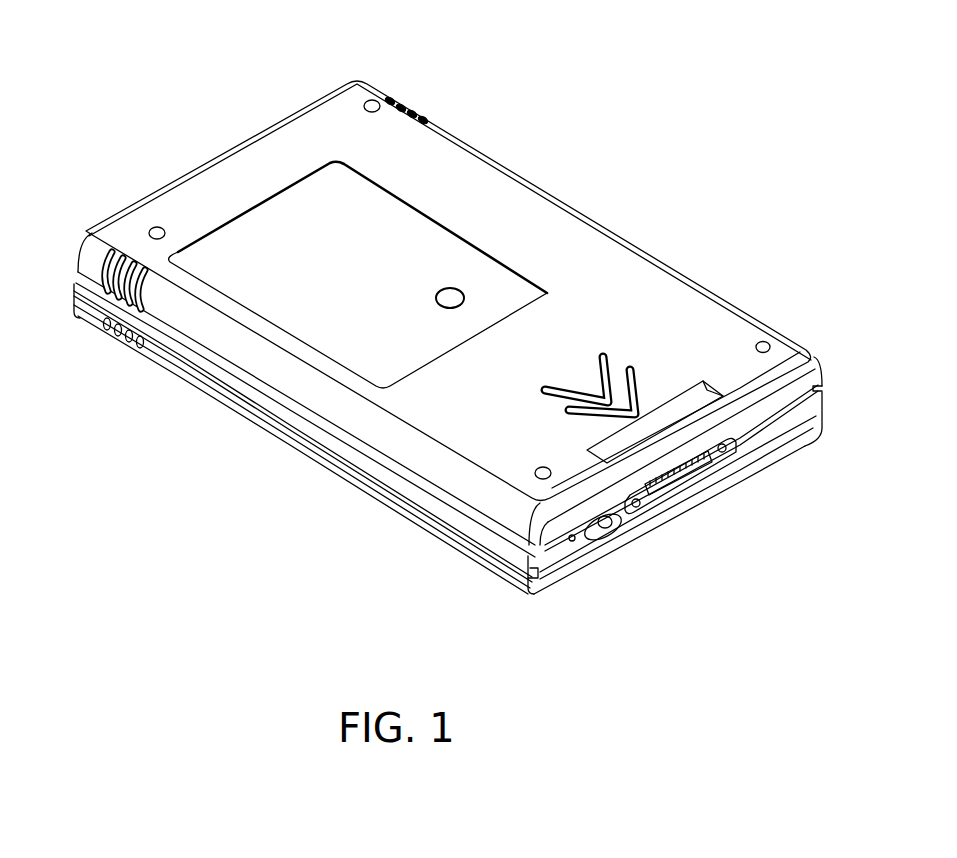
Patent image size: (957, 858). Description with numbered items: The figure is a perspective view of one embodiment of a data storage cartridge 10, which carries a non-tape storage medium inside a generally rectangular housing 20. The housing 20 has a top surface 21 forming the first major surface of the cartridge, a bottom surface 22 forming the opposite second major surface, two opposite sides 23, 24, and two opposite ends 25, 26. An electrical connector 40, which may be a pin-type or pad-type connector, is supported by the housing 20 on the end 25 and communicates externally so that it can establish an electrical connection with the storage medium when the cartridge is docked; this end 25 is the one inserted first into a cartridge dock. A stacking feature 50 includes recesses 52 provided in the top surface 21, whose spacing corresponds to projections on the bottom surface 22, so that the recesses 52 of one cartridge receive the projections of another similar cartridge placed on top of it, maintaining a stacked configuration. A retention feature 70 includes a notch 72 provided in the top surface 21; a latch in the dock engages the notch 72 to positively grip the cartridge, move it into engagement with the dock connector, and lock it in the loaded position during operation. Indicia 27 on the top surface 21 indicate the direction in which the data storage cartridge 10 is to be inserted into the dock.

The data storage cartridge 10 is at (640, 128).
The housing 20 is at (569, 247).
The top surface 21 is at (558, 325).
The bottom surface 22 is at (623, 543).
The side 23 is at (829, 375).
The side 24 is at (500, 548).
The end 25 is at (770, 432).
The end 26 is at (93, 262).
The indicia 27 is at (630, 372).
The electrical connector 40 is at (689, 481).
The stacking feature 50 is at (430, 44).
The recesses 52 is at (375, 103).
The retention feature 70 is at (694, 368).
The notch 72 is at (652, 430).